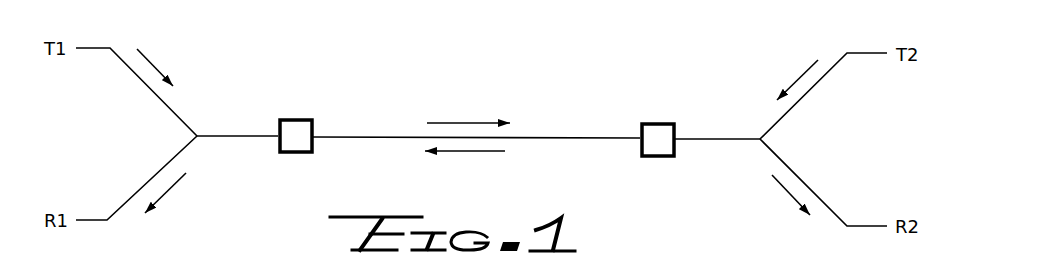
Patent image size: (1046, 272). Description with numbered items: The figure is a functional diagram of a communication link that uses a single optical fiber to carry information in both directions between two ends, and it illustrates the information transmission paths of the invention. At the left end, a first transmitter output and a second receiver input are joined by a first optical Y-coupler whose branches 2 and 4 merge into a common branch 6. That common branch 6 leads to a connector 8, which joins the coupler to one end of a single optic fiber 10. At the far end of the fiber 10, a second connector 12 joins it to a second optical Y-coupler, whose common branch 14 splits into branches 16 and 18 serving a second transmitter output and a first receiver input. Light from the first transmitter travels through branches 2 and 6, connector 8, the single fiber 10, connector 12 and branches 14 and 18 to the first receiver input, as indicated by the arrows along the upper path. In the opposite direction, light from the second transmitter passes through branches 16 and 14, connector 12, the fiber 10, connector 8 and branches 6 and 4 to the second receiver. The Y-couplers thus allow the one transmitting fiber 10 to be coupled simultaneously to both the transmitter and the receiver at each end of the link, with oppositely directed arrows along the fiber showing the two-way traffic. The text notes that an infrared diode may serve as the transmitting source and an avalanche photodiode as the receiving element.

The branch of first optical Y-coupler 2 is at (122, 60).
The branch of first optical Y-coupler 4 is at (148, 180).
The branch of first optical Y-coupler 6 is at (233, 137).
The connector 8 is at (302, 120).
The single optic fiber 10 is at (383, 137).
The connector 12 is at (643, 123).
The branch of second optical Y-coupler 14 is at (713, 137).
The branch of second optical Y-coupler 16 is at (838, 62).
The branch of second optical Y-coupler 18 is at (797, 173).